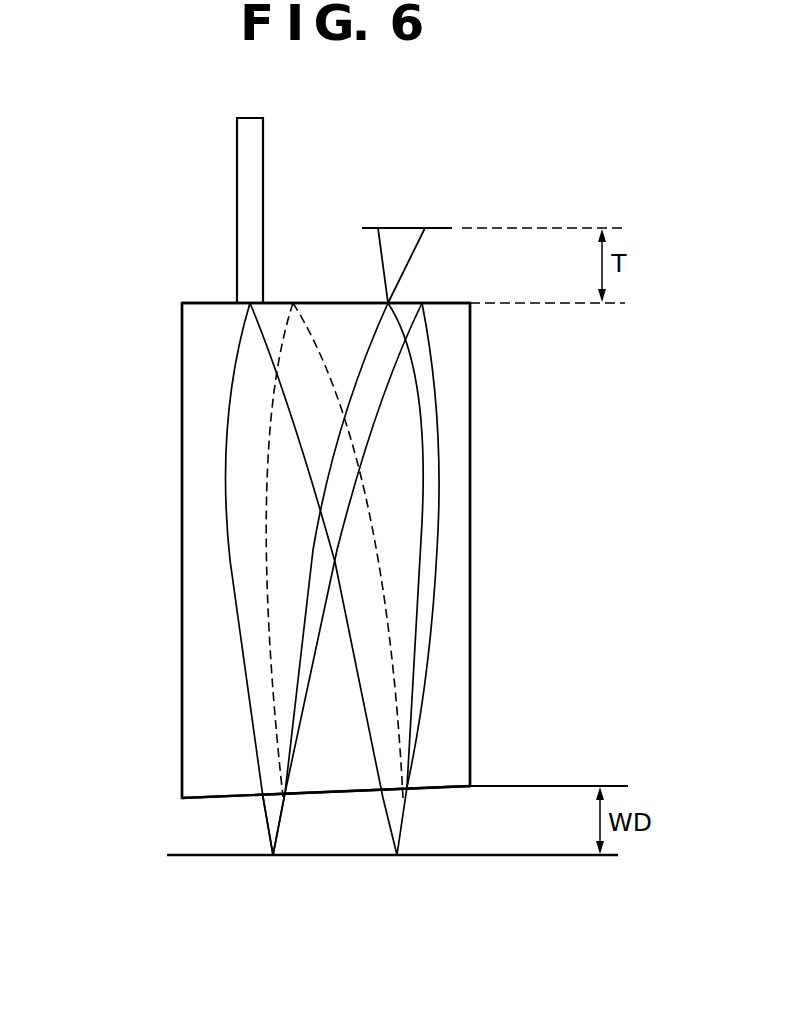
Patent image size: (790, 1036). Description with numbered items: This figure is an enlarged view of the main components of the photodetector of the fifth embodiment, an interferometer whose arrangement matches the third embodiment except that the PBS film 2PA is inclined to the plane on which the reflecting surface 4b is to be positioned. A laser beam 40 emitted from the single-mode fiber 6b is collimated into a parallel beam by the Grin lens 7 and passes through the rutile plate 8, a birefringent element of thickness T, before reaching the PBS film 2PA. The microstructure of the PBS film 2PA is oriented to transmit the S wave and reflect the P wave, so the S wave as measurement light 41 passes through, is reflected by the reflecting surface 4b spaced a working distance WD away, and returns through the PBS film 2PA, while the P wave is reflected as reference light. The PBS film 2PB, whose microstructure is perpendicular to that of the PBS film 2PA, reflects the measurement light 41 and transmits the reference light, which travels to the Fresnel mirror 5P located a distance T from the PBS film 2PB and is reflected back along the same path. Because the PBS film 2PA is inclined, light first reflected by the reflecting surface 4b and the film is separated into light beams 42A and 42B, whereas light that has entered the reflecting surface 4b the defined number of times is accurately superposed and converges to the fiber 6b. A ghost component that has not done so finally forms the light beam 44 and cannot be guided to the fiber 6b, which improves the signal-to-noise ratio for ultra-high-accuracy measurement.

The single-mode fiber 6b is at (252, 152).
The gradient index lens 7 is at (182, 338).
The rutile plate 8 is at (212, 750).
The PBS film 2PB is at (440, 303).
The PBS film 2PA is at (213, 800).
The Fresnel mirror 5P is at (403, 228).
The light beam 44 is at (312, 312).
The laser beam 40 is at (232, 515).
The light beam 42A is at (442, 495).
The light beam 42B is at (432, 420).
The reflecting surface 4b is at (180, 856).
The measurement light 41 is at (267, 817).